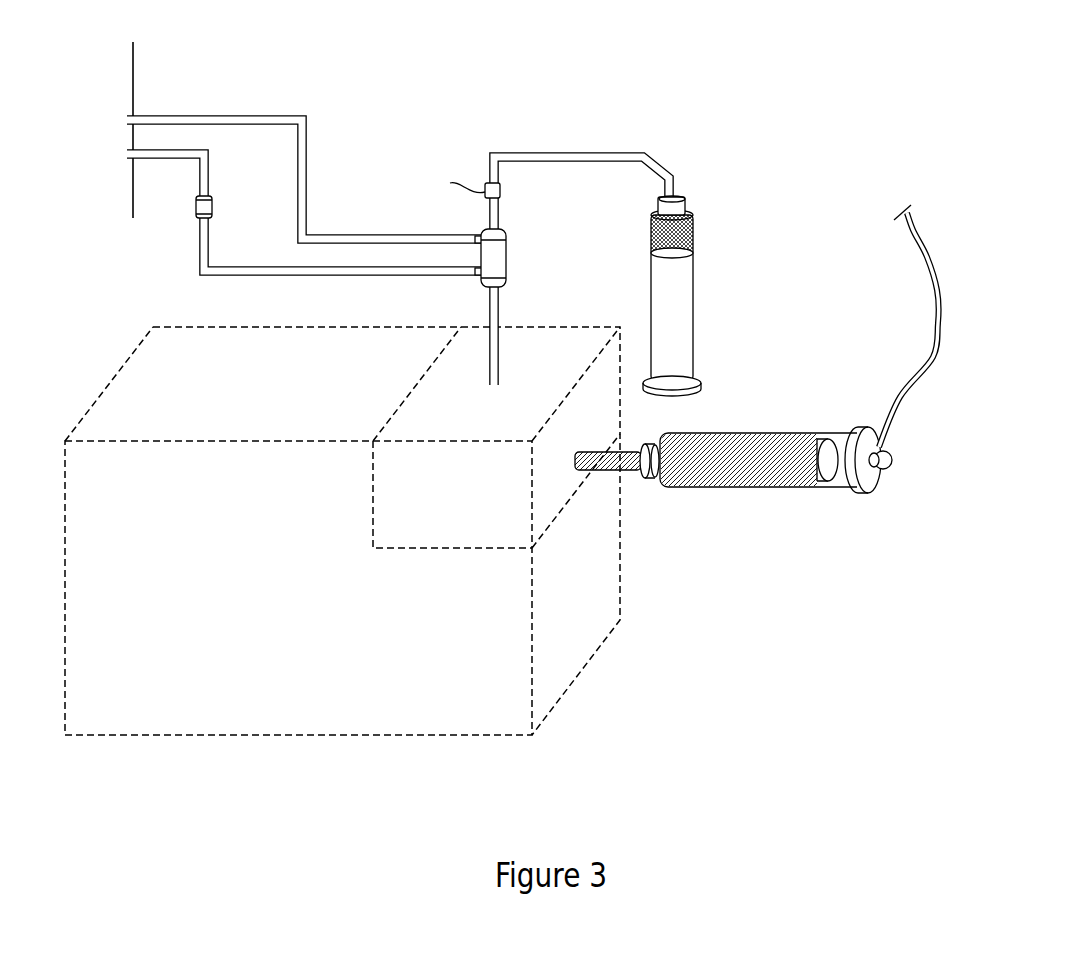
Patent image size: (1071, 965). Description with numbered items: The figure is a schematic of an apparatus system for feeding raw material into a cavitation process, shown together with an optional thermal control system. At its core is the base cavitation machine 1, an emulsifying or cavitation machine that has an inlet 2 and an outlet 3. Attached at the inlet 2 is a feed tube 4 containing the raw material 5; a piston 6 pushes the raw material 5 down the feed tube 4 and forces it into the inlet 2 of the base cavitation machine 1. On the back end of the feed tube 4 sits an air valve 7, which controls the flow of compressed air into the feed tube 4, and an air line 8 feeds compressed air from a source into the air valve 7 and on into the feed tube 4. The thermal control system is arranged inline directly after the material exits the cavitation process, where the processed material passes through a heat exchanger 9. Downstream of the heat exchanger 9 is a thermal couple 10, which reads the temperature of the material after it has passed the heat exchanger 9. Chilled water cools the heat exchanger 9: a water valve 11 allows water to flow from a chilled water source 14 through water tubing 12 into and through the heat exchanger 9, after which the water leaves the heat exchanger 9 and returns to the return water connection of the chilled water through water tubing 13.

The base cavitation machine 1 is at (320, 735).
The inlet 2 is at (600, 470).
The outlet 3 is at (647, 162).
The feed tube 4 is at (845, 487).
The raw material 5 is at (737, 463).
The piston 6 is at (820, 434).
The air valve 7 is at (892, 459).
The air line 8 is at (935, 305).
The heat exchanger 9 is at (492, 227).
The thermal couple 10 is at (490, 187).
The water valve 11 is at (207, 208).
The water tubing 12 is at (203, 247).
The water tubing 13 is at (283, 120).
The chilled water source 14 is at (128, 67).